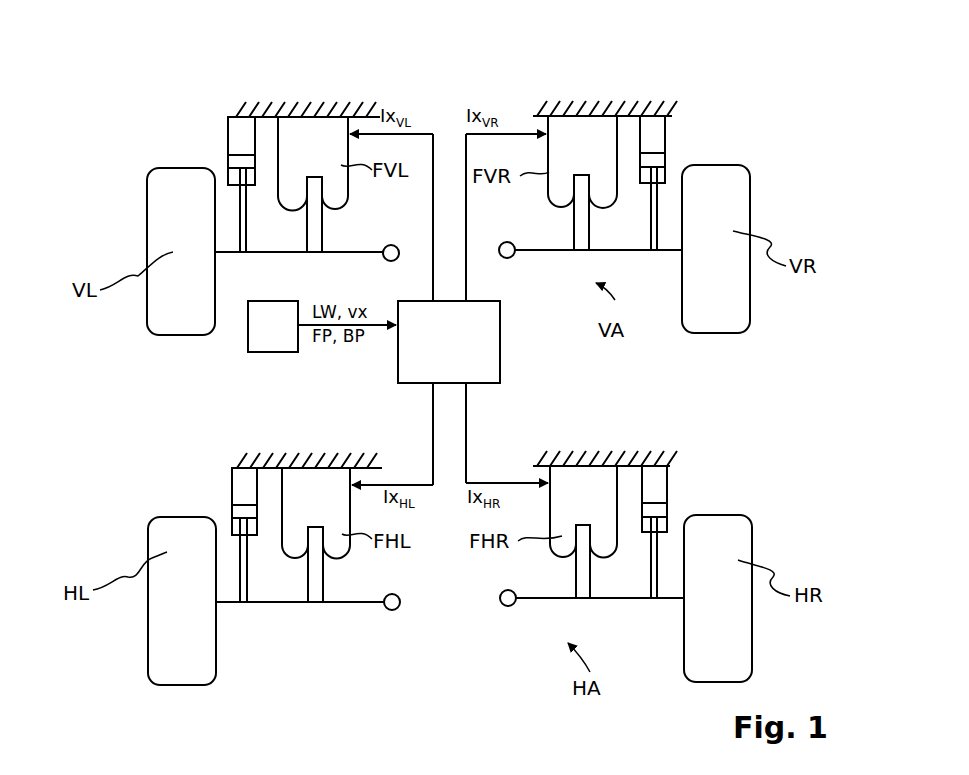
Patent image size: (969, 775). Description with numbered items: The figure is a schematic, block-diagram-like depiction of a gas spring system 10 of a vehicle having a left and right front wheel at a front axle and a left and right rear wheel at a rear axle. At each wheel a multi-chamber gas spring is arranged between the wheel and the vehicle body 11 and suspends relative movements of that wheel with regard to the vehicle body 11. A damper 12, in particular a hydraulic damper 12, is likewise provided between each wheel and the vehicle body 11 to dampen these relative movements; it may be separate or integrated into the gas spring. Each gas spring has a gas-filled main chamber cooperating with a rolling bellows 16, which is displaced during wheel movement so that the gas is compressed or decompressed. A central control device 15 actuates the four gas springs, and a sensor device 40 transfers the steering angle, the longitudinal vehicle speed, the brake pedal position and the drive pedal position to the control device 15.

The gas spring system 10 is at (769, 112).
The vehicle body 11 is at (293, 112).
The damper 12 is at (237, 137).
The control device 15 is at (482, 333).
The rolling bellows 16 is at (342, 207).
The sensor device 40 is at (248, 338).